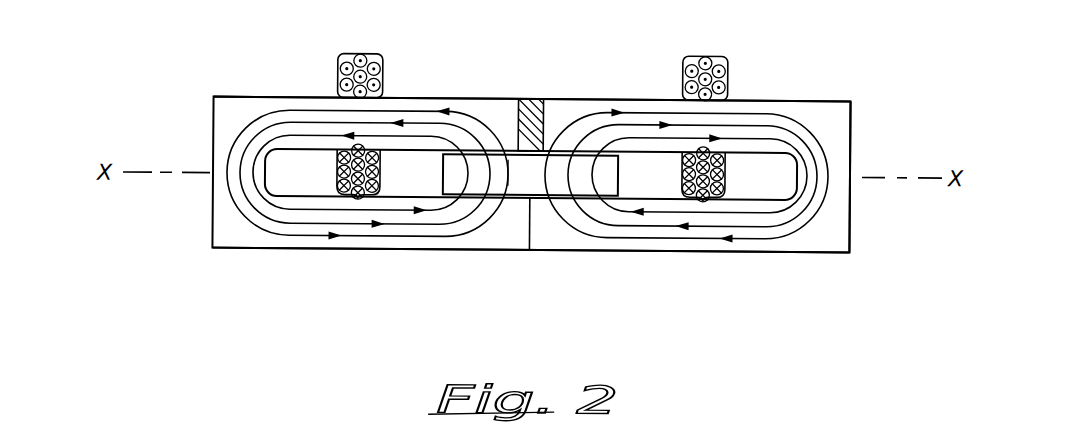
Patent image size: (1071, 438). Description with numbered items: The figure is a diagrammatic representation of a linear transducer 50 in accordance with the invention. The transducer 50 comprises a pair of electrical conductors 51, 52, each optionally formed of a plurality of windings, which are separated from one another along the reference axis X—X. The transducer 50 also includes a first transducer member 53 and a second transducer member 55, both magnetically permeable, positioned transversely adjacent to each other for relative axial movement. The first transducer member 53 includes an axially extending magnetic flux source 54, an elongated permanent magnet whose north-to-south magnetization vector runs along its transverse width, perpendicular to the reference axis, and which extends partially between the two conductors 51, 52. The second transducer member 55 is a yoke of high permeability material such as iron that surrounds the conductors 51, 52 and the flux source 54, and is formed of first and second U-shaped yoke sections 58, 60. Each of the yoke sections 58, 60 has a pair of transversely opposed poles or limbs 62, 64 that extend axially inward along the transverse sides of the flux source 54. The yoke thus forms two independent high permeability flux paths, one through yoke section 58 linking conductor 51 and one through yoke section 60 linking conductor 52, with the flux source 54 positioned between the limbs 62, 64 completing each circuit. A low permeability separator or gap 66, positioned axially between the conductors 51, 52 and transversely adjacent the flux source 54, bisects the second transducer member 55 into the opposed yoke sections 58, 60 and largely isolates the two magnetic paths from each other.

The transducer 50 is at (550, 58).
The electrical conductor 51 is at (723, 173).
The electrical conductor 52 is at (337, 163).
The first transducer member 53 is at (555, 168).
The magnetic flux source 54 is at (507, 167).
The second transducer member 55 is at (830, 96).
The first U-shaped yoke section 58 is at (837, 118).
The second U-shaped yoke section 60 is at (227, 110).
The pole or limb 62 is at (465, 105).
The pole or limb 64 is at (505, 238).
The separator or gap 66 is at (528, 105).